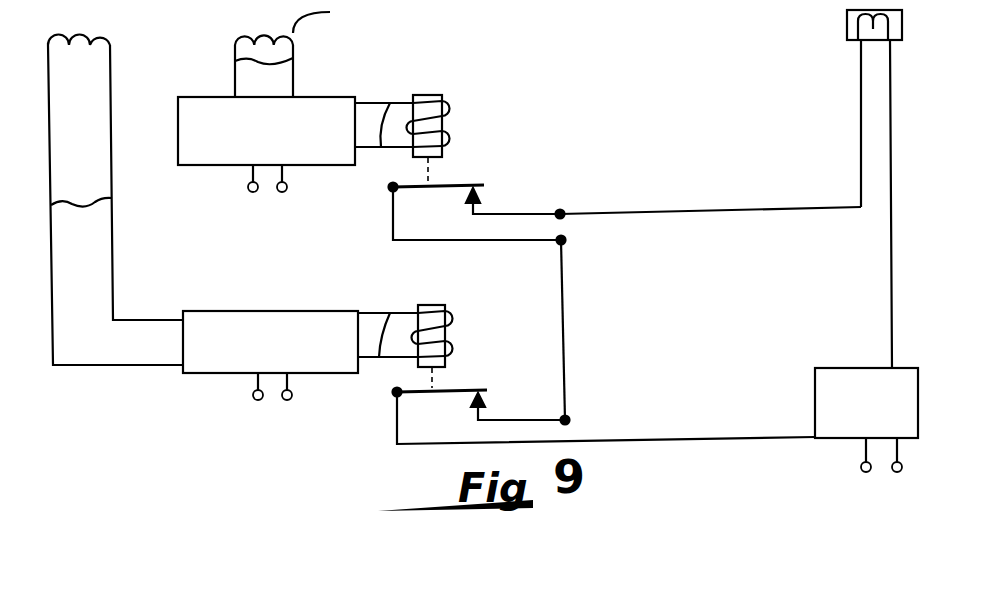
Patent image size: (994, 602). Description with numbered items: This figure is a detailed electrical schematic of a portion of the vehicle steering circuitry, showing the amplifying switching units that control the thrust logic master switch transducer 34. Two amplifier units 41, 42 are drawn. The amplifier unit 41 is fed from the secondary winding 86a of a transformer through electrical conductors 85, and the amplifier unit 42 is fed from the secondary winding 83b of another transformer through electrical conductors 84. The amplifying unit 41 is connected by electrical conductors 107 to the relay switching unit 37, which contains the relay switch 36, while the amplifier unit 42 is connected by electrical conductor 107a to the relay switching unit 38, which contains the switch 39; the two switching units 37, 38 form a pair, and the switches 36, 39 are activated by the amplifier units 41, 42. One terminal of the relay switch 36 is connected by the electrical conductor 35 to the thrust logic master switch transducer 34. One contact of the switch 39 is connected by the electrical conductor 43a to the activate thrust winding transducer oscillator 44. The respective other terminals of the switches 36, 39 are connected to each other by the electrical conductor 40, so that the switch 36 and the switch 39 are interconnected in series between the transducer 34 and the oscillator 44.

The secondary winding 83b is at (104, 36).
The electrical conductors 84 is at (81, 217).
The electrical conductors 85 is at (264, 66).
The secondary winding 86a is at (292, 34).
The amplifier unit 41 is at (337, 88).
The amplifier unit 42 is at (228, 311).
The electrical conductors 107 is at (390, 94).
The electrical conductor 107a is at (383, 311).
The relay switch 36 is at (463, 184).
The switching unit 37 is at (465, 145).
The switching unit 38 is at (460, 334).
The switch 39 is at (463, 390).
The electrical conductor 35 is at (687, 211).
The electrical conductor 40 is at (565, 336).
The electrical conductor 43a is at (668, 437).
The thrust logic master switch transducer 34 is at (847, 27).
The activate thrust winding transducer oscillator 44 is at (820, 368).